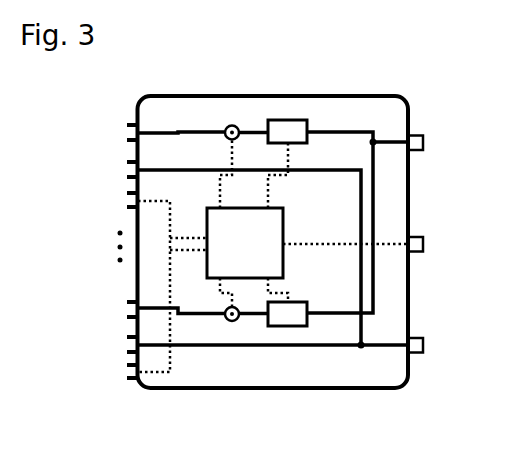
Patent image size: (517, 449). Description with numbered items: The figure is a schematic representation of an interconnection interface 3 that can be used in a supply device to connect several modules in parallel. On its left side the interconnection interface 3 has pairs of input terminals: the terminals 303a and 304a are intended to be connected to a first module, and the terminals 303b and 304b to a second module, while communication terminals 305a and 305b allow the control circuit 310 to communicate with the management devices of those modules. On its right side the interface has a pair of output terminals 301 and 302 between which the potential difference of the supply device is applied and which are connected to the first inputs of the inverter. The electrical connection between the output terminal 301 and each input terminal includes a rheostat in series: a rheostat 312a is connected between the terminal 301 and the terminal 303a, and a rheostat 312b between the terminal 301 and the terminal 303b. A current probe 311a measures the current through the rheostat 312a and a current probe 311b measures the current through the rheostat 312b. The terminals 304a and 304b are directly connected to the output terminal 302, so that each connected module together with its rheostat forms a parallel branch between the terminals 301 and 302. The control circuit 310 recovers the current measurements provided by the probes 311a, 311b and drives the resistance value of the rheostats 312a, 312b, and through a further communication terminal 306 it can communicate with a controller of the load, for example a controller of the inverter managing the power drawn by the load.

The interconnection interface 3 is at (274, 96).
The output terminal 301 is at (423, 143).
The output terminal 302 is at (423, 345).
The input terminal 303a is at (127, 125).
The input terminal 304a is at (127, 164).
The communication terminal 305a is at (127, 209).
The input terminal 303b is at (127, 300).
The input terminal 304b is at (127, 337).
The communication terminal 305b is at (127, 367).
The communication terminal 306 is at (423, 244).
The control circuit 310 is at (267, 256).
The current probe 311a is at (229, 126).
The current probe 311b is at (233, 322).
The rheostat 312a is at (288, 119).
The rheostat 312b is at (288, 327).